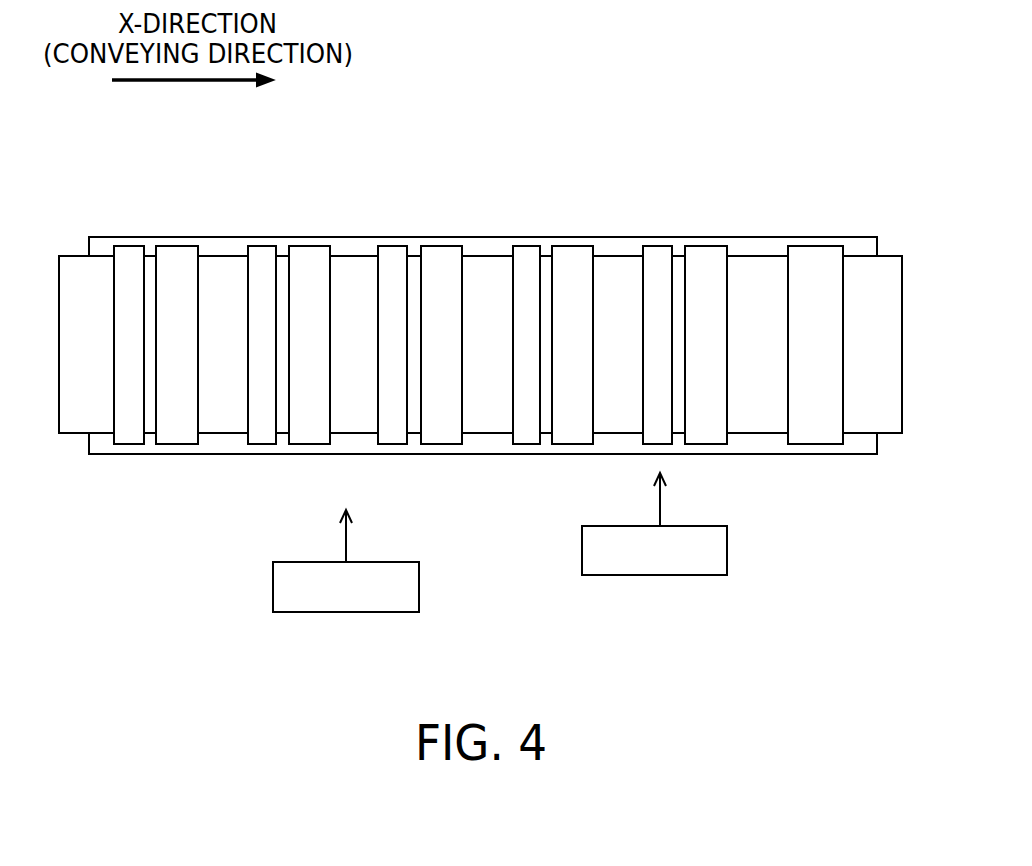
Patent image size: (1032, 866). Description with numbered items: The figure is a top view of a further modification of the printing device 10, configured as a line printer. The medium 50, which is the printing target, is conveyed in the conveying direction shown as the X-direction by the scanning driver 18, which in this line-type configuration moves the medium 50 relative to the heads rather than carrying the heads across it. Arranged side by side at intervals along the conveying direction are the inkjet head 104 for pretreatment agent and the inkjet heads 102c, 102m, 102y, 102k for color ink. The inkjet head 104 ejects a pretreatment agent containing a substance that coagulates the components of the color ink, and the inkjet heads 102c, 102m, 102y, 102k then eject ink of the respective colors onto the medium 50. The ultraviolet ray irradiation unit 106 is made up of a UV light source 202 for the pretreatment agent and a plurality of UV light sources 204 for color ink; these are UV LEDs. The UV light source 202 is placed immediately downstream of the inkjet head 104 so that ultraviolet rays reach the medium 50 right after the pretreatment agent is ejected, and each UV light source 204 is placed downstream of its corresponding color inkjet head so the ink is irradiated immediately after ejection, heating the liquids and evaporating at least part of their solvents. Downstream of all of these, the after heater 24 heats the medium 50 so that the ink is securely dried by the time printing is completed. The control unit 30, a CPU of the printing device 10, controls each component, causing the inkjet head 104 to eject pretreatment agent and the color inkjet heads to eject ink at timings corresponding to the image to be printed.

The printing device 10 is at (815, 80).
The medium 50 is at (72, 434).
The inkjet head 104 is at (129, 246).
The UV light source 202 is at (186, 246).
The UV light source 204 is at (727, 188).
The ultraviolet ray irradiation unit 106 is at (470, 286).
The inkjet head 102c is at (262, 246).
The inkjet head 102m is at (392, 246).
The inkjet head 102y is at (524, 246).
The inkjet head 102k is at (657, 246).
The after heater 24 is at (815, 247).
The control unit 30 is at (419, 591).
The scanning driver 18 is at (655, 575).